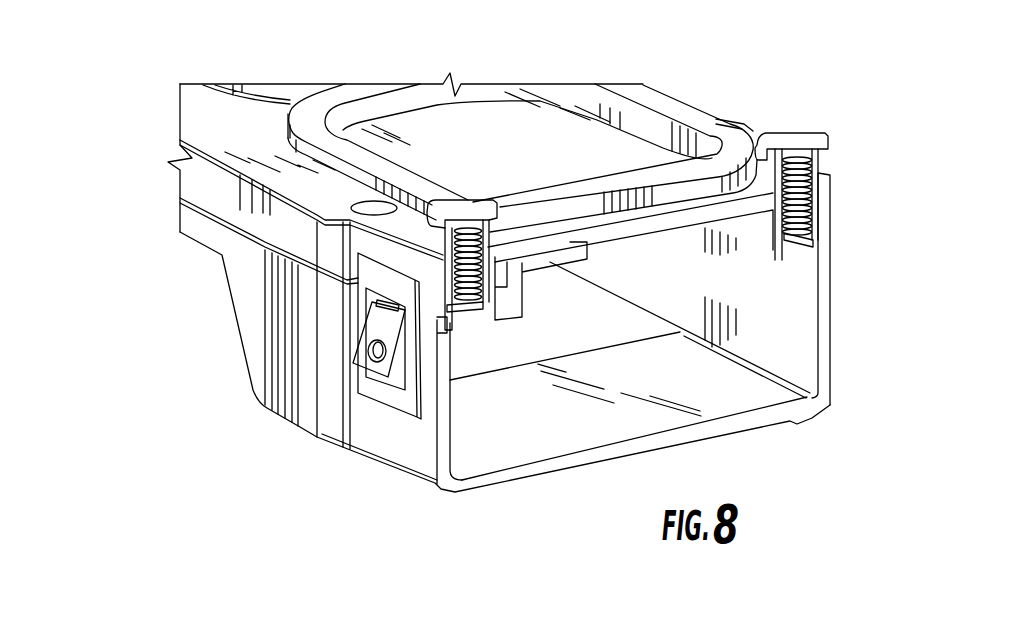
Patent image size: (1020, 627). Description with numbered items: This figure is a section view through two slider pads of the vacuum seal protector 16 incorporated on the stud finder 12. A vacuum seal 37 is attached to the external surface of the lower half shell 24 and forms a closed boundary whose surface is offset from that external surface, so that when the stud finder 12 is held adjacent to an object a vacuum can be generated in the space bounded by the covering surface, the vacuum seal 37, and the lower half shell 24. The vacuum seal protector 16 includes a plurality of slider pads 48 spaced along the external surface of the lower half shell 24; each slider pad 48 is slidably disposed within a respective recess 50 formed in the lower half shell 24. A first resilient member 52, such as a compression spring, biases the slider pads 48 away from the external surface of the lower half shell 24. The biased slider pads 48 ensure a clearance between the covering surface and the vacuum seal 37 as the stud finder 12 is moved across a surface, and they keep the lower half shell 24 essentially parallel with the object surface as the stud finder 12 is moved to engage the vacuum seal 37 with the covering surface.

The stud finder 12 is at (146, 92).
The vacuum seal protector 16 is at (810, 127).
The lower half shell 24 is at (178, 142).
The vacuum seal 37 is at (302, 103).
The slider pads 48 is at (461, 205).
The recesses 50 is at (472, 313).
The first resilient member 52 is at (462, 279).